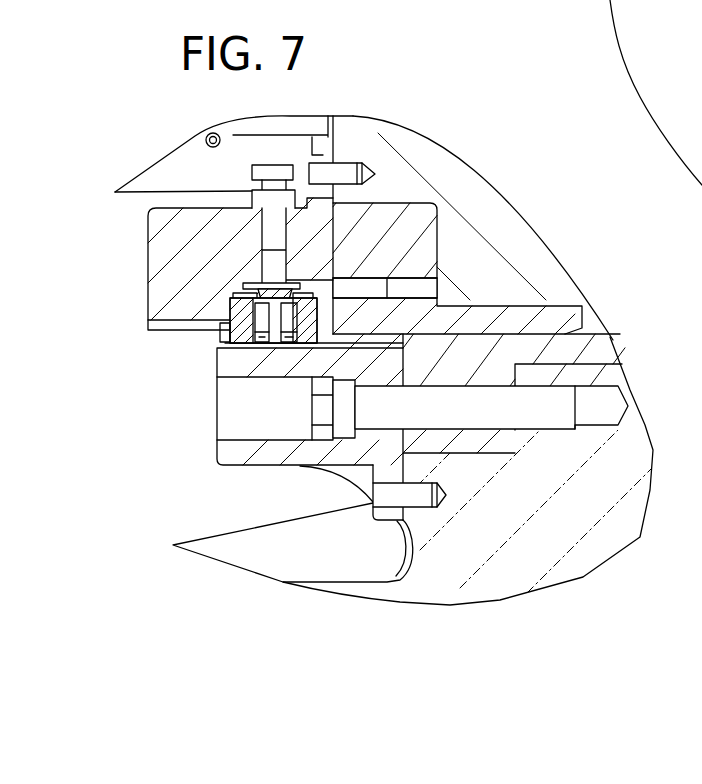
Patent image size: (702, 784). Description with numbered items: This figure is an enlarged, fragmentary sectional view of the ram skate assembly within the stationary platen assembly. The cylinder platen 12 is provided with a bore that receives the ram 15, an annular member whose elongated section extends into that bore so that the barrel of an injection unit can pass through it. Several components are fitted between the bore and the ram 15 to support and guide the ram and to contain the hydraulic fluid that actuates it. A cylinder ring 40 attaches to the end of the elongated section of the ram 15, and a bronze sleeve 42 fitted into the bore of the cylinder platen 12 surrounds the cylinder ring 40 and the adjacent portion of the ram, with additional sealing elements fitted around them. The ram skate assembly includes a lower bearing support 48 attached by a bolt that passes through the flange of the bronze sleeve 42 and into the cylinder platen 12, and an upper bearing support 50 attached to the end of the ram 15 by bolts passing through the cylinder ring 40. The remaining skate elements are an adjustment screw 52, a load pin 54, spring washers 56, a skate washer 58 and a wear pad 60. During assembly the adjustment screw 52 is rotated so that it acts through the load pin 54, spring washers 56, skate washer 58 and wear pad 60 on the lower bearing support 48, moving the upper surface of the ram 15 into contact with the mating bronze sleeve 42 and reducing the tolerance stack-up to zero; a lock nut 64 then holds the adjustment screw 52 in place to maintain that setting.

The cylinder platen 12 is at (593, 493).
The ram 15 is at (528, 273).
The cylinder ring 40 is at (407, 210).
The bronze sleeve 42 is at (450, 453).
The lower bearing support 48 is at (273, 465).
The upper bearing support 50 is at (163, 260).
The adjustment screw 52 is at (278, 165).
The load pin 54 is at (257, 281).
The spring washers 56 is at (303, 277).
The skate washer 58 is at (237, 314).
The wear pad 60 is at (240, 340).
The lock nut 64 is at (250, 193).